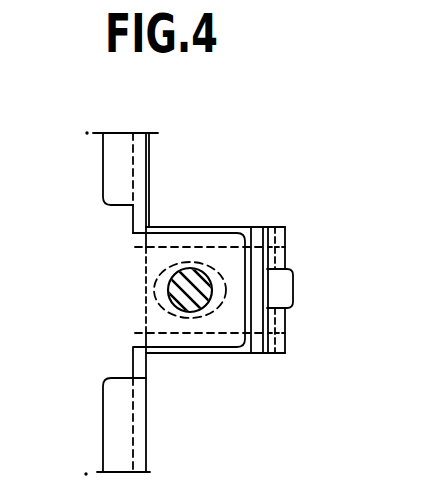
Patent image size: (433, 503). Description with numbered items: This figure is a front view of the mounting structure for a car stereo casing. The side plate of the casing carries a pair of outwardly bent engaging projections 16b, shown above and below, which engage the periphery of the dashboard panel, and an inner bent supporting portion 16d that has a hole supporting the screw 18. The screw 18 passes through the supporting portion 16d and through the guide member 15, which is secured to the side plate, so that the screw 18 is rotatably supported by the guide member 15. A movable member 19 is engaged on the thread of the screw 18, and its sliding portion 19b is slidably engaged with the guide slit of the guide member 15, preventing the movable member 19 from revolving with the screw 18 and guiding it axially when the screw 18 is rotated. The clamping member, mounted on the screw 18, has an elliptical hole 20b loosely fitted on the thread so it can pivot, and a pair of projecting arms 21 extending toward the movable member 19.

The guide member 15 is at (283, 245).
The engaging projections 16b is at (108, 174).
The supporting portion 16d is at (133, 320).
The screw 18 is at (168, 286).
The movable member 19 is at (294, 293).
The sliding portion 19b is at (288, 280).
The hole 20b is at (219, 286).
The projecting arms 21 is at (240, 248).